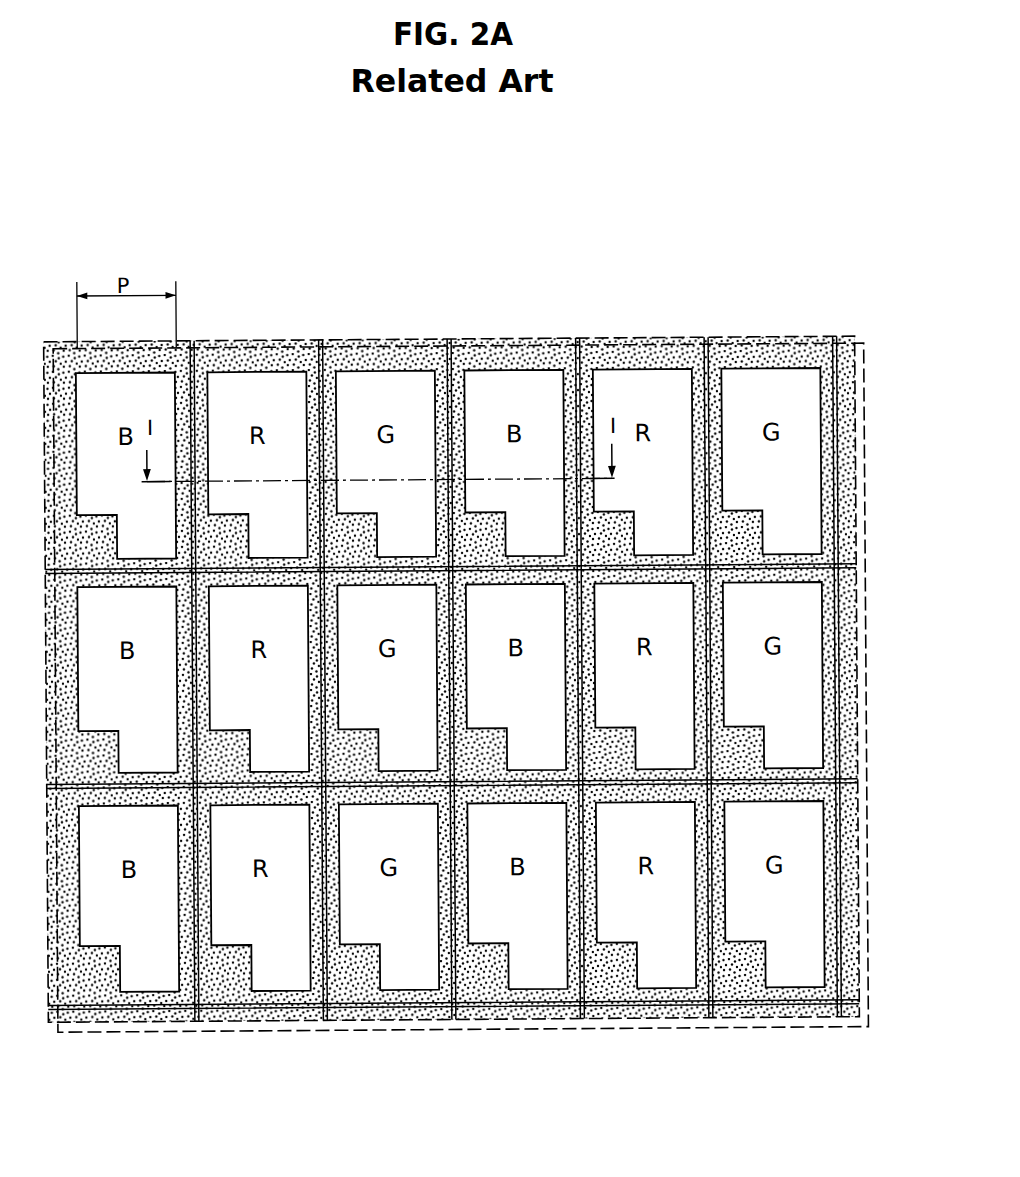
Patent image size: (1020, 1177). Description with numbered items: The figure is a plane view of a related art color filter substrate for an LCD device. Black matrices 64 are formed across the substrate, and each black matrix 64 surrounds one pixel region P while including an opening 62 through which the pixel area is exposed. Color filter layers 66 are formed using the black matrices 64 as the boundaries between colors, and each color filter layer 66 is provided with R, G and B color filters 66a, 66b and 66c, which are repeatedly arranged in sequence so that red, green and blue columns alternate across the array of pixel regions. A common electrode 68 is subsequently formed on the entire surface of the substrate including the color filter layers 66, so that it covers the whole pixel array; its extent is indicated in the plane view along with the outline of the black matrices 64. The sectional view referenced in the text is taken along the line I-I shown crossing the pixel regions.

The opening 62 is at (241, 391).
The black matrix 64 is at (857, 390).
The color filter layer 66 is at (450, 608).
The R color filter 66a is at (288, 387).
The G color filter 66b is at (397, 387).
The B color filter 66c is at (508, 387).
The common electrode 68 is at (866, 440).